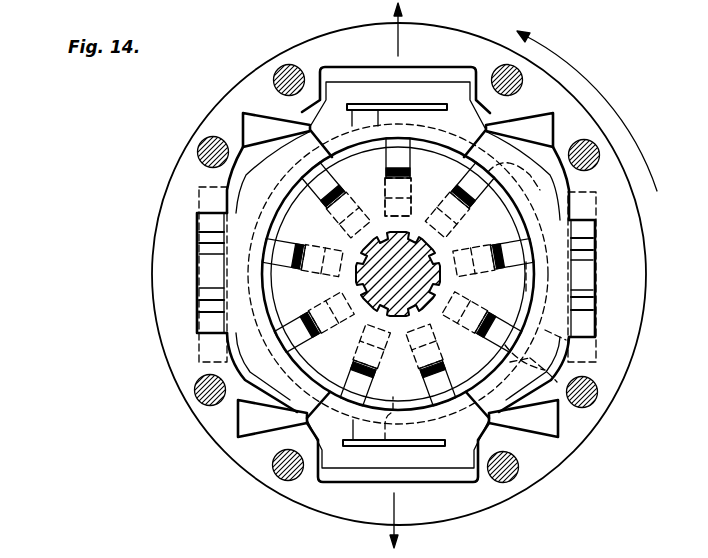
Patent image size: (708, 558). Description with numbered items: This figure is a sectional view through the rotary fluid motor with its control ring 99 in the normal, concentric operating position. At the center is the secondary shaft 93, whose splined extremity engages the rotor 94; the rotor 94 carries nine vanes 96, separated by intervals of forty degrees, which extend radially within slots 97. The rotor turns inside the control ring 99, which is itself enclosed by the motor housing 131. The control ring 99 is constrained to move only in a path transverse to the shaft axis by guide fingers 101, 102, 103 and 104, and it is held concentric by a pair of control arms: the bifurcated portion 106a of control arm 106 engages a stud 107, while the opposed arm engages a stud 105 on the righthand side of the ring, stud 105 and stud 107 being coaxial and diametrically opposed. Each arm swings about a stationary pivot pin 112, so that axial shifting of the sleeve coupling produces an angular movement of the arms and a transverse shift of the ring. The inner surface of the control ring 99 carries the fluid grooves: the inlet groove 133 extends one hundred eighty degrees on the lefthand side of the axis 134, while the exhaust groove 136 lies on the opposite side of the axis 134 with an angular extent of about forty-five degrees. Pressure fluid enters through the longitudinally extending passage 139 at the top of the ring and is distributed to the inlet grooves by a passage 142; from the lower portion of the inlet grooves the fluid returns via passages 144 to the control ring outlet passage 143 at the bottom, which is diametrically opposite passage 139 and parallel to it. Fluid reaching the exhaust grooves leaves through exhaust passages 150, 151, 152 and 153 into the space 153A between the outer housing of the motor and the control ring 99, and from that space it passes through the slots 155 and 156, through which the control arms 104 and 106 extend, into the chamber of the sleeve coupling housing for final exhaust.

The motor housing 131 is at (307, 39).
The guide finger 101 is at (556, 442).
The inlet groove 133 is at (252, 187).
The guide finger 103 is at (240, 128).
The guide finger 102 is at (545, 130).
The guide finger 104 is at (248, 420).
The slot 155 is at (196, 217).
The control arm 106 is at (196, 240).
The stud 107 is at (206, 277).
The bifurcated portion 106a is at (207, 294).
The stationary pivot pin 112 is at (197, 340).
The exhaust groove 136 is at (597, 203).
The slot 156 is at (596, 243).
The stud 105 is at (588, 282).
The control ring 99 is at (576, 347).
The longitudinally extending passage 139 is at (400, 100).
The passage 142 is at (396, 118).
The control ring outlet passage 143 is at (380, 446).
The passage 144 is at (393, 427).
The rotor 94 is at (470, 388).
The vane 96 is at (472, 165).
The slot 97 is at (386, 190).
The secondary shaft 93 is at (360, 250).
The exhaust passage 150 is at (527, 215).
The exhaust passage 151 is at (525, 281).
The exhaust passage 152 is at (527, 304).
The exhaust passage 153 is at (503, 353).
The space 153A is at (557, 382).
The axis 134 is at (396, 531).